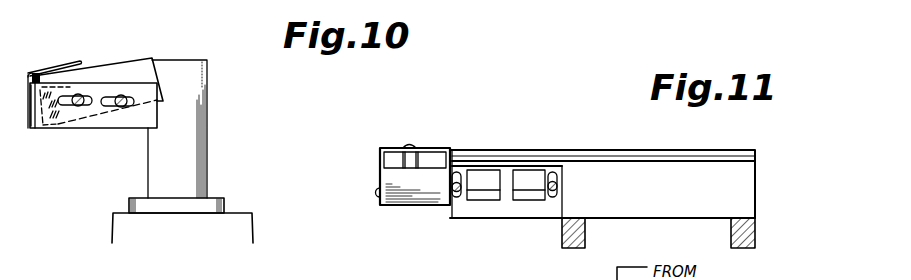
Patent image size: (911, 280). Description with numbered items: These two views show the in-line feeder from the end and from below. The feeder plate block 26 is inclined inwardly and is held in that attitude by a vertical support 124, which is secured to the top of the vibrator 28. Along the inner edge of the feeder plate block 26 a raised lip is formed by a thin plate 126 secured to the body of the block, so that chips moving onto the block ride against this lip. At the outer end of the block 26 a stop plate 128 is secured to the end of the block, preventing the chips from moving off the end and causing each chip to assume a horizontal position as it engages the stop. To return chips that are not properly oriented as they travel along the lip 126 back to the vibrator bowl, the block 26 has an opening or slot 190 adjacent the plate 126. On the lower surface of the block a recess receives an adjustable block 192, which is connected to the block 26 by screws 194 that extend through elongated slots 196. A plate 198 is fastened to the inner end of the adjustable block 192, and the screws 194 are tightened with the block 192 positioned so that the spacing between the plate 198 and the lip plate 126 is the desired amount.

In FIG. 10, the feeder plate block 26 is at (104, 75).
In FIG. 11, the feeder plate block 26 is at (748, 203).
In FIG. 10, the vibrator 28 is at (237, 213).
In FIG. 10, the vertical support 124 is at (210, 66).
In FIG. 11, the vertical support 124 is at (583, 236).
In FIG. 11, the thin plate 126 is at (611, 114).
In FIG. 10, the stop plate 128 is at (93, 124).
In FIG. 11, the stop plate 128 is at (380, 163).
In FIG. 11, the slot 190 is at (530, 190).
In FIG. 11, the adjustable block 192 is at (488, 219).
In FIG. 11, the screws 194 is at (559, 192).
In FIG. 11, the elongated slots 196 is at (559, 174).
In FIG. 11, the plate 198 is at (484, 164).